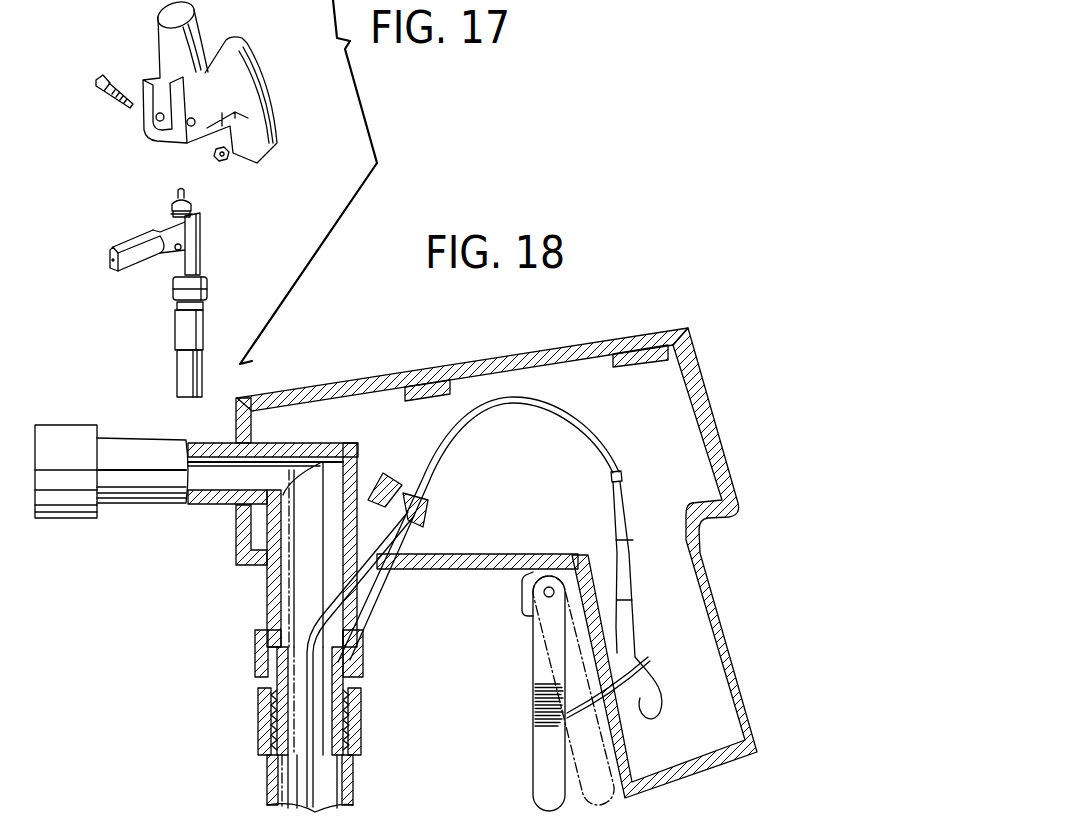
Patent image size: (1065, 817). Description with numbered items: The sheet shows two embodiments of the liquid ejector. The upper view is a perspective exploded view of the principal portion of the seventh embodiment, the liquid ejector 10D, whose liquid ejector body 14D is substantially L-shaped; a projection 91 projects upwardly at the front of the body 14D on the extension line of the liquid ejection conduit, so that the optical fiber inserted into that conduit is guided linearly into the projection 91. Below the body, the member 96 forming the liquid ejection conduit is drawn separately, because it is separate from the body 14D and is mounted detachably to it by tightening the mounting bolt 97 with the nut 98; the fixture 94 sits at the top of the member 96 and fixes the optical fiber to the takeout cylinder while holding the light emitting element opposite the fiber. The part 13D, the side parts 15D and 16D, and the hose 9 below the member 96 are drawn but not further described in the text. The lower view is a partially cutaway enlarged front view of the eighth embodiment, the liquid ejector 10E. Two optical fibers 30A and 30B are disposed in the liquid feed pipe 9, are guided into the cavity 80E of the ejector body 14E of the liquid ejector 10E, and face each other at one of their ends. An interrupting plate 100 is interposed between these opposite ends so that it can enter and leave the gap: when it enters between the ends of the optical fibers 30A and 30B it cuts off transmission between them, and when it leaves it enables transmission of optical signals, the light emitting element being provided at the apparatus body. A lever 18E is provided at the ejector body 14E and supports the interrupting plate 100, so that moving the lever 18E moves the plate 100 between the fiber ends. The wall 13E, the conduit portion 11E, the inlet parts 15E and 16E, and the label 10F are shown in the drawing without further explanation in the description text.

In FIG. 17, the projection 91 is at (200, 28).
In FIG. 17, the liquid ejector body 14D is at (243, 62).
In FIG. 17, the liquid ejector 10D is at (249, 81).
In FIG. 17, the body wall 13D is at (277, 128).
In FIG. 17, the mounting bolt 97 is at (97, 78).
In FIG. 17, the nut 98 is at (229, 161).
In FIG. 17, the fixture 94 is at (192, 204).
In FIG. 17, the member 96 is at (200, 258).
In FIG. 17, the inlet fitting 15D is at (113, 272).
In FIG. 17, the inlet tube 16D is at (143, 262).
In FIG. 17, the liquid feed pipe 9 is at (203, 365).
In FIG. 18, the liquid feed pipe 9 is at (265, 777).
In FIG. 18, the liquid ejector 10E is at (497, 519).
In FIG. 18, the ejector body 14E is at (697, 345).
In FIG. 18, the cavity 80E is at (628, 430).
In FIG. 18, the optical fiber 30A is at (722, 549).
In FIG. 18, the optical fiber 30B is at (633, 595).
In FIG. 18, the housing side wall 13E is at (733, 657).
In FIG. 18, the interrupting plate 100 is at (633, 683).
In FIG. 18, the lever 18E is at (537, 763).
In FIG. 18, the valve pipe 11E is at (287, 587).
In FIG. 18, the inlet fitting 15E is at (53, 433).
In FIG. 18, the inlet tube 16E is at (133, 447).
In FIG. 18, the sprayer housing 10F is at (700, 816).